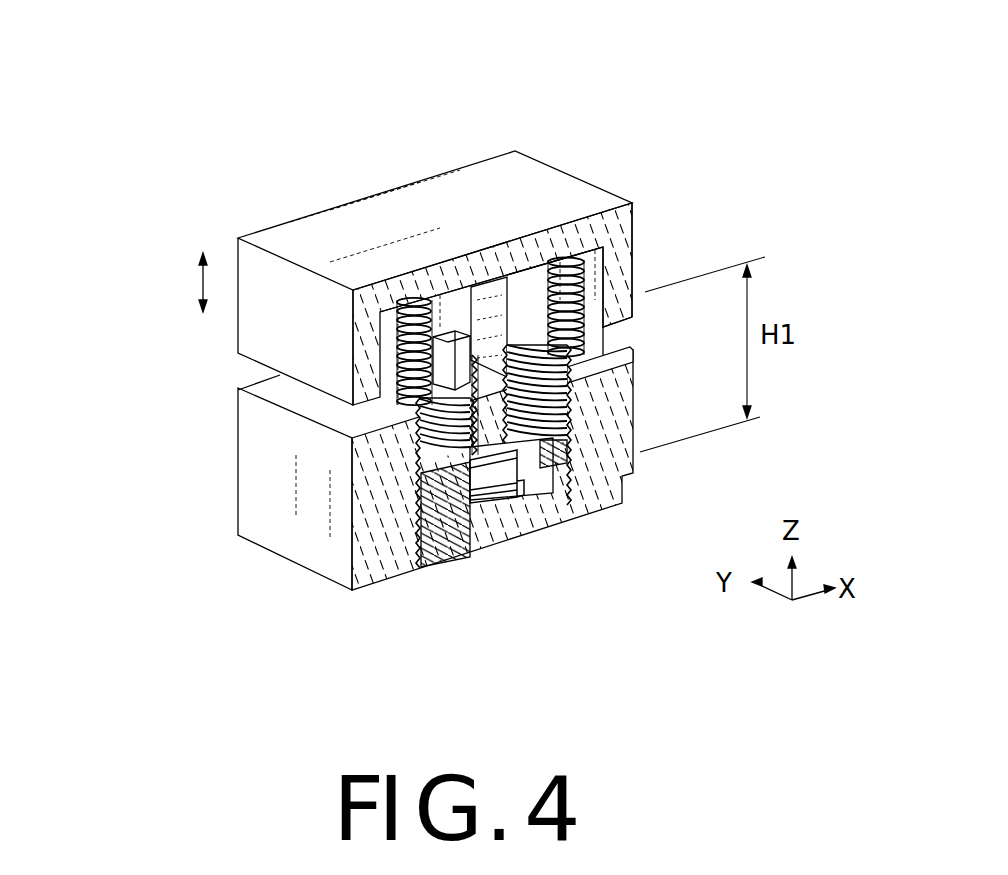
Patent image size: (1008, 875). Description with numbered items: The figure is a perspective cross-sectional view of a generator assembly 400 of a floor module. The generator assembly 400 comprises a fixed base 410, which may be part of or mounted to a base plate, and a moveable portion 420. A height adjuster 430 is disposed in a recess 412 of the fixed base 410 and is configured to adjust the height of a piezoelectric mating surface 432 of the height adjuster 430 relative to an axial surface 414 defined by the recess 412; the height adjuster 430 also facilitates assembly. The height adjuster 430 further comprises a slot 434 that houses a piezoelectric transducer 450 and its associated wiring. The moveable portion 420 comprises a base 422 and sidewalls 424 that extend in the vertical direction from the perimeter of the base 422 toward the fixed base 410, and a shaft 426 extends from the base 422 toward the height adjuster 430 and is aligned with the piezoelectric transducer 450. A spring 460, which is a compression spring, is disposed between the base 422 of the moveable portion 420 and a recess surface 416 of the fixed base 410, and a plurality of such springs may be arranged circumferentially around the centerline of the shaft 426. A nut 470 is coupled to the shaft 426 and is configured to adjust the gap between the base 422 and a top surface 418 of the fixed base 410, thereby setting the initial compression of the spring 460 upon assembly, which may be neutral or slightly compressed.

The generator assembly 400 is at (225, 80).
The fixed base 410 is at (298, 530).
The recess 412 is at (550, 395).
The axial surface 414 is at (565, 320).
The recess surface 416 is at (390, 406).
The top surface 418 is at (458, 326).
The moveable portion 420 is at (374, 240).
The base 422 is at (476, 222).
The sidewalls 424 is at (615, 272).
The shaft 426 is at (493, 312).
The height adjuster 430 is at (457, 538).
The piezoelectric mating surface 432 is at (492, 500).
The slot 434 is at (535, 468).
The piezoelectric transducer 450 is at (507, 475).
The spring 460 is at (400, 353).
The nut 470 is at (468, 375).